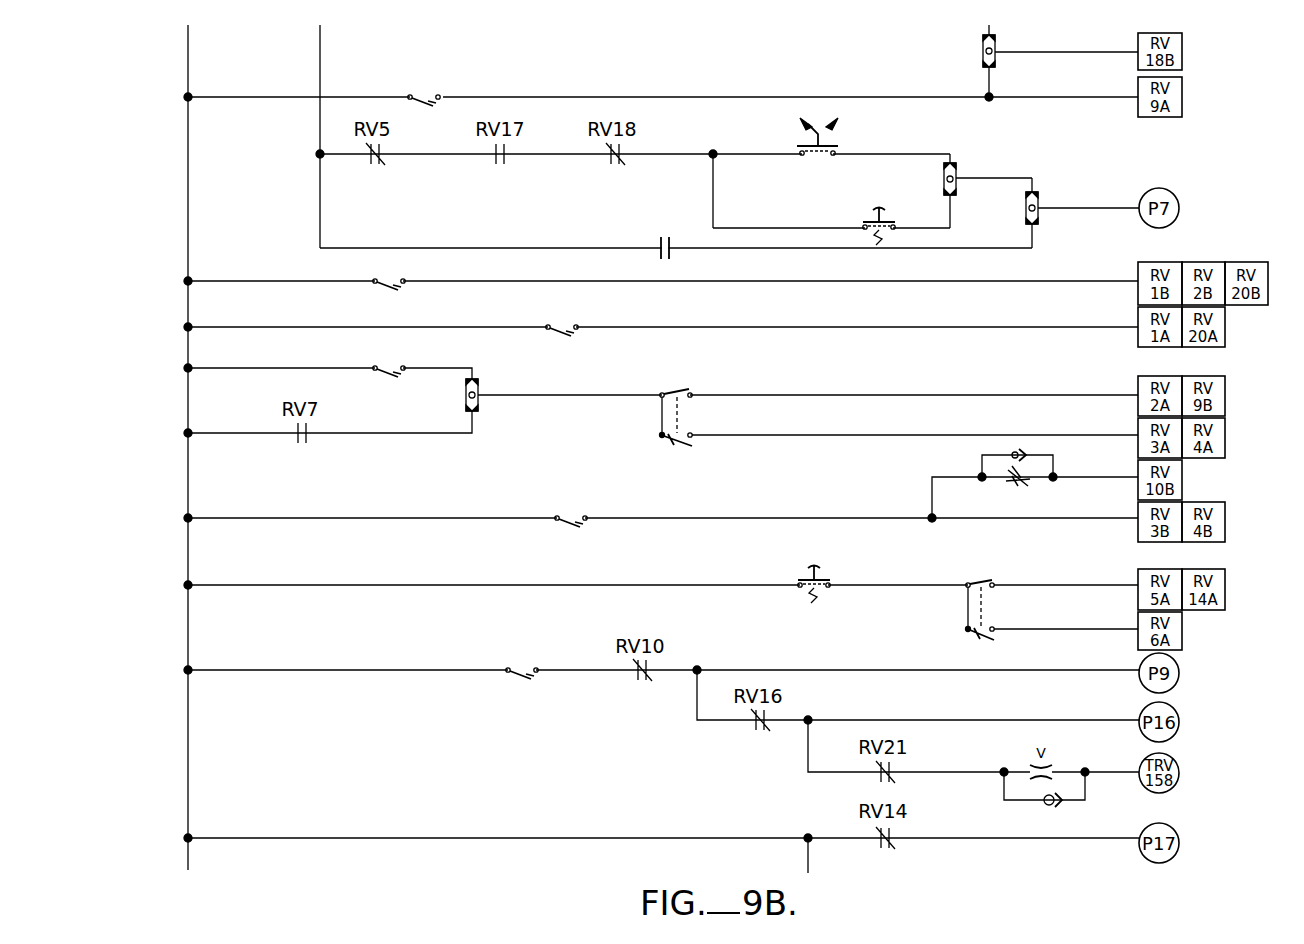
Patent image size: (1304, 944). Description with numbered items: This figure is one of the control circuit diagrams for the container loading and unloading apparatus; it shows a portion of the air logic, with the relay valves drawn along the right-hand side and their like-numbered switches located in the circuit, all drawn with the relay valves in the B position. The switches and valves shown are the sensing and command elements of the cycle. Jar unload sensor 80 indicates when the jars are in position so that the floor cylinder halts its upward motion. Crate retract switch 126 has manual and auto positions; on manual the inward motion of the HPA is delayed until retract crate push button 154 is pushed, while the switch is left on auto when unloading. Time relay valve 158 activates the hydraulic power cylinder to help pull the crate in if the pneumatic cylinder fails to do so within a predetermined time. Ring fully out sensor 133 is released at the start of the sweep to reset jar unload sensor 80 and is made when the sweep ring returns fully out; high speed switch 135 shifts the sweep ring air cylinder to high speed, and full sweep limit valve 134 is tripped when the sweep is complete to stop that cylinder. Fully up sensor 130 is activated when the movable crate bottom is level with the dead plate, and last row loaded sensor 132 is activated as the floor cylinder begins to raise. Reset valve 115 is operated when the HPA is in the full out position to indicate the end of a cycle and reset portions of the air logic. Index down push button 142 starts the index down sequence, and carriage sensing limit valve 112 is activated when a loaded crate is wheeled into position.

The jar unload sensor 80 is at (434, 86).
The crate retract switch 126 is at (805, 163).
The retract crate push button 154 is at (860, 221).
The time relay valve 158 is at (666, 240).
The ring fully out sensor 133 is at (393, 282).
The high speed switch 135 is at (567, 327).
The full sweep limit valve 134 is at (393, 369).
The fully up sensor 130 is at (684, 390).
The reset valve 115 is at (574, 518).
The index down push button 142 is at (830, 576).
The last row loaded sensor 132 is at (990, 578).
The carriage sensing limit valve 112 is at (520, 668).